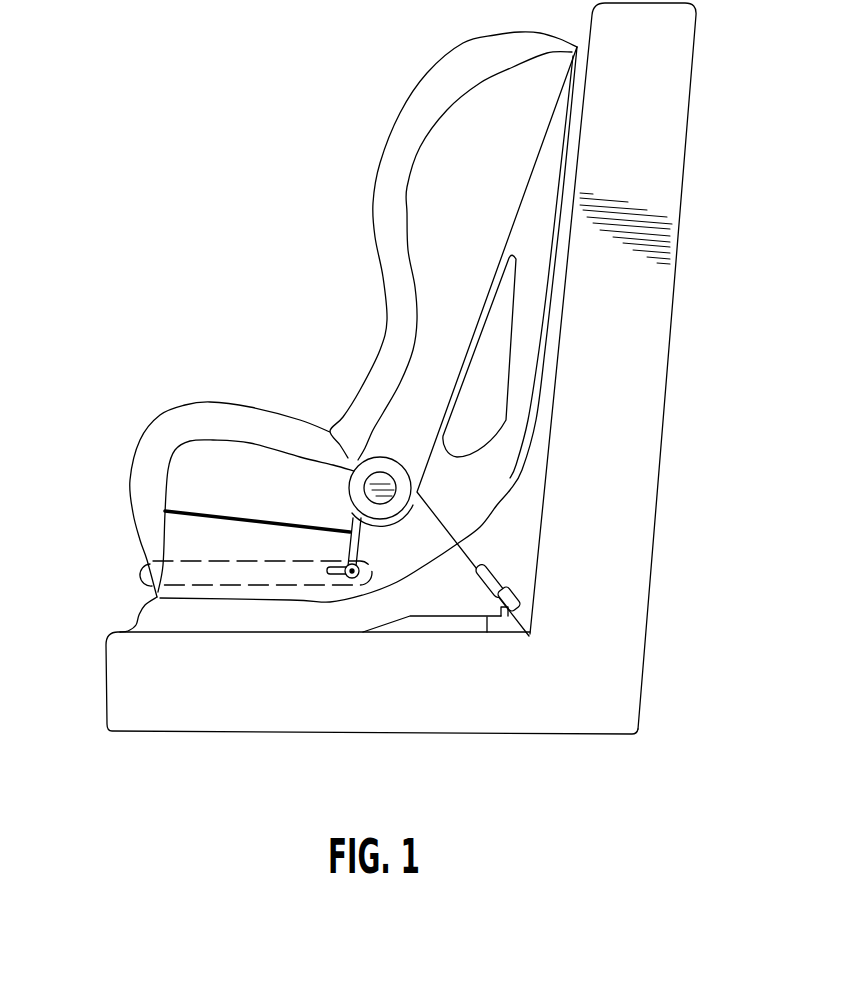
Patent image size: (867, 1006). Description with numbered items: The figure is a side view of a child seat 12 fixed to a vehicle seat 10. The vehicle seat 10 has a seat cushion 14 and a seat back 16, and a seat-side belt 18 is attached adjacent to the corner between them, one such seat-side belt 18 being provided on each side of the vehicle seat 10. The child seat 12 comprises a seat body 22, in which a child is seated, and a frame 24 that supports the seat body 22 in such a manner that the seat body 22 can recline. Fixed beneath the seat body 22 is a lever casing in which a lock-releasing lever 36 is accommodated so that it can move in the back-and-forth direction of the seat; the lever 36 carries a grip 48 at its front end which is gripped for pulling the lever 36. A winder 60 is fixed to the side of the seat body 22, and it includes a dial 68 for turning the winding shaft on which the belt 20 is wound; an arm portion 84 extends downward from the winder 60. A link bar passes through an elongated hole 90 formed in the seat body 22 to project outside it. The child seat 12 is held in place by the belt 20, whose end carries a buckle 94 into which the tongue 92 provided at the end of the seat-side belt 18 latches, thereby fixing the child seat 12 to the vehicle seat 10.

The vehicle seat 10 is at (618, 692).
The child seat 12 is at (352, 119).
The seat cushion 14 is at (437, 410).
The seat back 16 is at (652, 327).
The seat-side belt 18 is at (520, 618).
The belt 20 is at (440, 517).
The seat body 22 is at (420, 210).
The frame 24 is at (197, 617).
The lock-releasing lever 36 is at (193, 560).
The grip 48 is at (137, 576).
The winder 60 is at (353, 452).
The dial 68 is at (348, 488).
The arm portion 84 is at (359, 540).
The elongated hole 90 is at (327, 575).
The tongue 92 is at (512, 605).
The buckle 94 is at (497, 583).